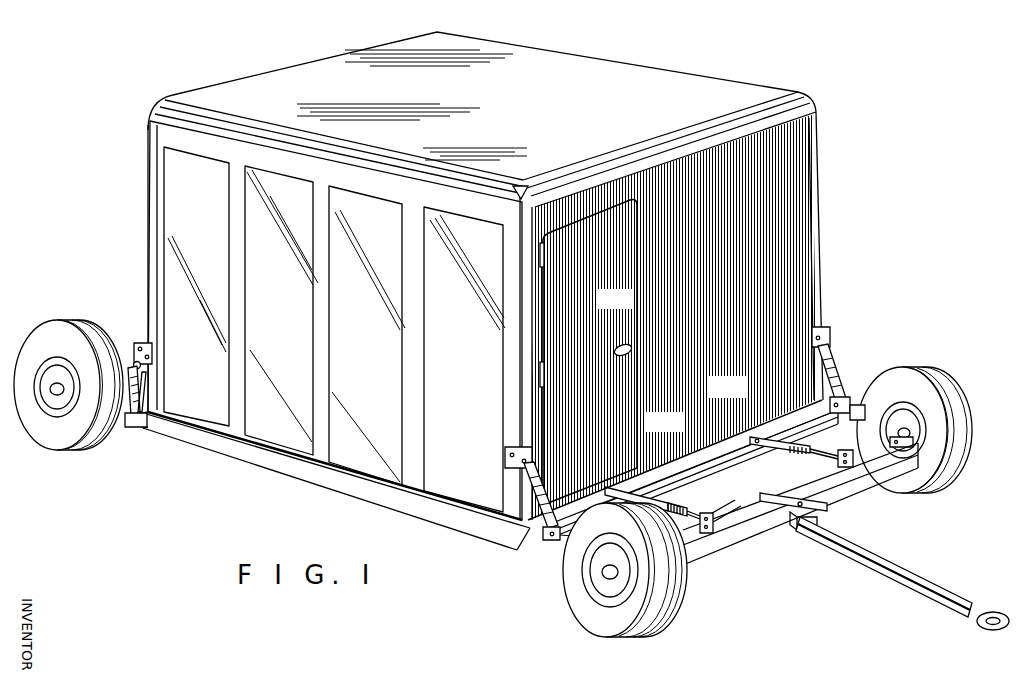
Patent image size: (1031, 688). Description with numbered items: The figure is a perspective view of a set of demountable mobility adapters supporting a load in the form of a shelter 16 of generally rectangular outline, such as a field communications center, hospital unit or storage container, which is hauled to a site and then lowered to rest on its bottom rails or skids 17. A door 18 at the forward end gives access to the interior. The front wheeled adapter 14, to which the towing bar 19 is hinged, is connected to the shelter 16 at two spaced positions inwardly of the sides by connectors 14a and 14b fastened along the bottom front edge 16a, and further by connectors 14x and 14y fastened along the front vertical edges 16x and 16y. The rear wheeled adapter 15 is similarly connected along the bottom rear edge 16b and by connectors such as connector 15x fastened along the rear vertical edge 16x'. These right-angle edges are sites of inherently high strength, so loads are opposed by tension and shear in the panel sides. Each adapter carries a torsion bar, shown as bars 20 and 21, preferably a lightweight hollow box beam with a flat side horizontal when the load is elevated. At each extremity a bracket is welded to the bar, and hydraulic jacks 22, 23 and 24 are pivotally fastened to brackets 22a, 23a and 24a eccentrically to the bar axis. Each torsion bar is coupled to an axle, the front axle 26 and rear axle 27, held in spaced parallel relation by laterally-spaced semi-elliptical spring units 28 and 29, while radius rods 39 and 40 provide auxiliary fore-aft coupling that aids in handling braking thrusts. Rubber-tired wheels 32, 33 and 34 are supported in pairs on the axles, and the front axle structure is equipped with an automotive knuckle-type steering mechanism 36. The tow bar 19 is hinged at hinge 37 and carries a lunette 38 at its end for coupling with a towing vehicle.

The front wheeled adapter 14 is at (862, 498).
The connector 14a is at (647, 470).
The connector 14b is at (722, 432).
The connector 14x is at (508, 458).
The connector 14y is at (878, 316).
The rear wheeled adapter 15 is at (118, 282).
The connector 15x is at (155, 355).
The shelter 16 is at (470, 103).
The bottom front edge 16a is at (525, 550).
The bottom rear edge 16b is at (147, 430).
The front vertical edge 16x is at (491, 353).
The rear vertical edge 16x' is at (116, 268).
The front vertical edge 16y is at (830, 262).
The bottom rails or skids 17 is at (350, 500).
The door 18 is at (621, 309).
The towing bar 19 is at (905, 567).
The torsion bar 20 is at (715, 455).
The torsion bar 21 is at (143, 404).
The hydraulic jack 22 is at (530, 503).
The bracket 22a is at (556, 541).
The hydraulic jack 23 is at (838, 378).
The bracket 23a is at (860, 402).
The hydraulic jack 24 is at (128, 350).
The bracket 24a is at (130, 427).
The front axle 26 is at (752, 537).
The axle 27 is at (137, 358).
The semi-elliptical spring unit 28 is at (700, 506).
The semi-elliptical spring unit 29 is at (840, 447).
The rubber-tired wheel 32 is at (688, 597).
The rubber-tired wheel 33 is at (948, 402).
The rubber-tired wheel 34 is at (44, 330).
The steering mechanism 36 is at (945, 480).
The hinge 37 is at (802, 530).
The lunette 38 is at (1000, 612).
The radius rod 39 is at (732, 504).
The radius rod 40 is at (802, 455).